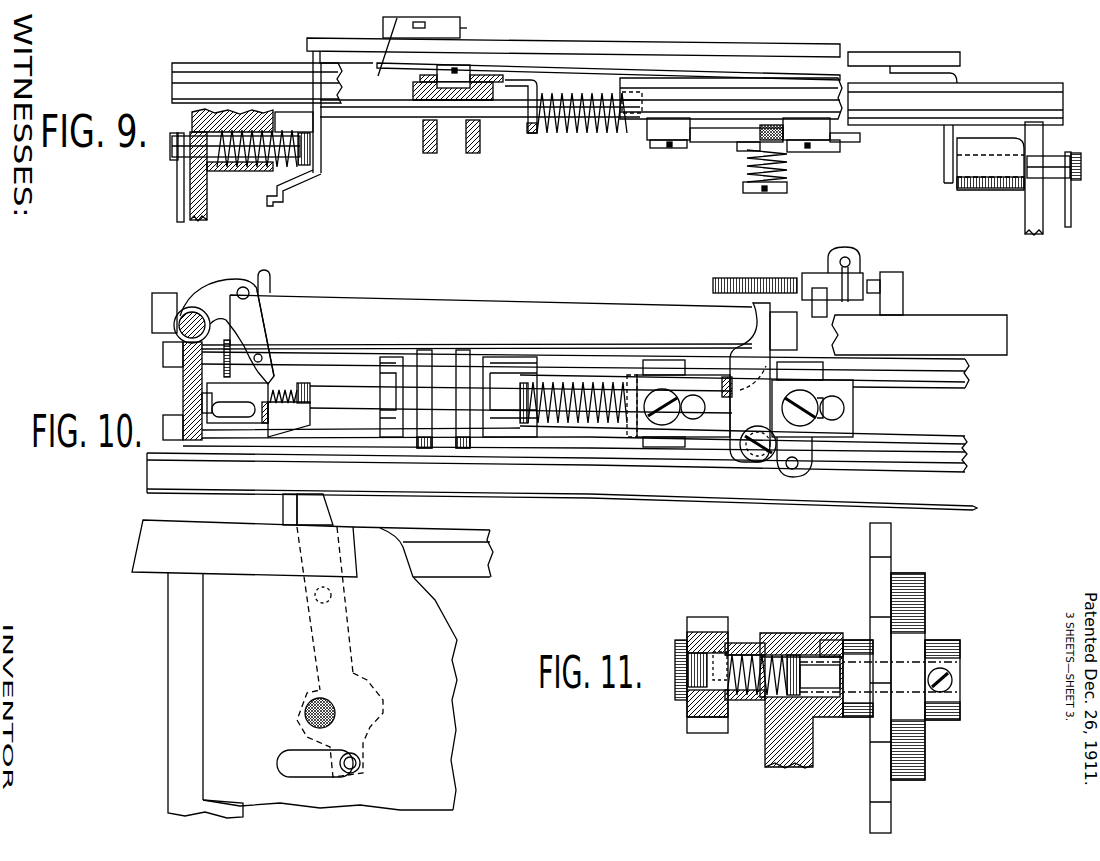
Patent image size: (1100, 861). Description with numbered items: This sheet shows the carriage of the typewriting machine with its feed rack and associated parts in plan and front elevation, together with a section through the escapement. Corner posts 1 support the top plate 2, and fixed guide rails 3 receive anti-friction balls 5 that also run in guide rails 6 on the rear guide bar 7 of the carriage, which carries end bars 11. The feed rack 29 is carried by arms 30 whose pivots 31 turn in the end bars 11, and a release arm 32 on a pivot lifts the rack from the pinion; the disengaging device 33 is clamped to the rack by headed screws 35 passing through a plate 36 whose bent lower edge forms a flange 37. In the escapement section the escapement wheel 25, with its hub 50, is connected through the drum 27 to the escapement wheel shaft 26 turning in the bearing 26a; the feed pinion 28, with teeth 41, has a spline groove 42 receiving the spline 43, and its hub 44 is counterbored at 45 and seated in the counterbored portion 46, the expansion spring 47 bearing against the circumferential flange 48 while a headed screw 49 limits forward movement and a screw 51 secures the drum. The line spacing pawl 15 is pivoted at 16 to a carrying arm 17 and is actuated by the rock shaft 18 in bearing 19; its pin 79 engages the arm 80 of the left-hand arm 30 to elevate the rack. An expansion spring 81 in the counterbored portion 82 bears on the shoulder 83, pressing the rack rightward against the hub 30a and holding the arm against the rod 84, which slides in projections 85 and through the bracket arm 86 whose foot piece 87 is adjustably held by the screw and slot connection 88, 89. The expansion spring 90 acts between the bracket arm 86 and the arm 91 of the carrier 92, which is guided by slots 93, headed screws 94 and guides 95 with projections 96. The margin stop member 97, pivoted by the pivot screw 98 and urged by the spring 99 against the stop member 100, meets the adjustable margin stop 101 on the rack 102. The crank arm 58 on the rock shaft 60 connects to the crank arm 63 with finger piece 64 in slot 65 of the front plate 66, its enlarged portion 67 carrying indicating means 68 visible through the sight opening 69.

In FIG. 10, the corner posts 1 is at (170, 690).
In FIG. 10, the top plate 2 is at (422, 534).
In FIG. 10, the fixed guide rails 3 is at (577, 412).
In FIG. 10, the anti-friction balls or rollers 5 is at (408, 341).
In FIG. 9, the guide rails 6 is at (178, 63).
In FIG. 10, the guide rails 6 is at (342, 351).
In FIG. 9, the rear guide bar 7 is at (488, 102).
In FIG. 10, the rear guide bar 7 is at (583, 400).
In FIG. 9, the end bars 11 is at (207, 190).
In FIG. 10, the end bars 11 is at (185, 382).
In FIG. 10, the line spacing pawl 15 is at (263, 318).
In FIG. 10, the pivot 16 is at (243, 287).
In FIG. 10, the carrying arm 17 is at (208, 290).
In FIG. 10, the rock shaft 18 is at (177, 320).
In FIG. 10, the bearing 19 is at (186, 307).
In FIG. 11, the escapement wheel 25 is at (890, 537).
In FIG. 11, the escapement wheel shaft 26 is at (822, 695).
In FIG. 11, the bearing 26a is at (797, 643).
In FIG. 11, the drum 27 is at (908, 676).
In FIG. 11, the feed pinion 28 is at (713, 640).
In FIG. 9, the feed rack 29 is at (757, 52).
In FIG. 9, the arms 30 is at (315, 115).
In FIG. 9, the hub 30a is at (955, 183).
In FIG. 9, the pivots 31 is at (197, 148).
In FIG. 9, the release arm 32 is at (180, 200).
In FIG. 9, the disengaging device 33 is at (462, 37).
In FIG. 9, the headed screws 35 is at (417, 28).
In FIG. 9, the plate 36 is at (383, 32).
In FIG. 9, the flange 37 is at (385, 58).
In FIG. 11, the teeth 41 is at (690, 720).
In FIG. 11, the spline groove 42 is at (700, 632).
In FIG. 11, the spline 43 is at (723, 653).
In FIG. 11, the hub 44 is at (742, 703).
In FIG. 11, the counterbore 45 is at (730, 702).
In FIG. 11, the counterbored portion 46 is at (767, 700).
In FIG. 11, the expansion spring 47 is at (693, 707).
In FIG. 11, the circumferential flange 48 is at (789, 675).
In FIG. 11, the headed screw 49 is at (677, 690).
In FIG. 11, the hub 50 is at (838, 650).
In FIG. 11, the screw 51 is at (938, 668).
In FIG. 10, the crank arm 58 is at (308, 509).
In FIG. 10, the rock shaft 60 is at (313, 595).
In FIG. 10, the crank arm 63 is at (347, 617).
In FIG. 10, the finger piece 64 is at (359, 758).
In FIG. 10, the slot 65 is at (297, 768).
In FIG. 10, the front plate 66 is at (407, 700).
In FIG. 10, the enlarged portion 67 is at (365, 690).
In FIG. 10, the indicating means 68 is at (336, 715).
In FIG. 10, the sight opening 69 is at (302, 725).
In FIG. 10, the pin 79 is at (263, 355).
In FIG. 9, the arm 80 is at (268, 206).
In FIG. 10, the arm 80 is at (267, 430).
In FIG. 9, the expansion spring 81 is at (262, 169).
In FIG. 10, the expansion spring 81 is at (300, 388).
In FIG. 9, the counterbored portion 82 is at (247, 123).
In FIG. 9, the shoulder 83 is at (306, 147).
In FIG. 10, the shoulder 83 is at (310, 388).
In FIG. 9, the rod 84 is at (390, 110).
In FIG. 10, the rod 84 is at (521, 399).
In FIG. 9, the projections 85 is at (466, 153).
In FIG. 10, the projections 85 is at (427, 350).
In FIG. 9, the bracket arm 86 is at (531, 133).
In FIG. 10, the bracket arm 86 is at (527, 382).
In FIG. 9, the foot piece 87 is at (537, 87).
In FIG. 9, the screw 88 is at (473, 65).
In FIG. 9, the slot 89 is at (442, 84).
In FIG. 9, the expansion spring 90 is at (590, 130).
In FIG. 10, the expansion spring 90 is at (577, 402).
In FIG. 9, the arm 91 is at (642, 105).
In FIG. 10, the arm 91 is at (627, 387).
In FIG. 9, the carrier 92 is at (710, 142).
In FIG. 10, the carrier 92 is at (717, 423).
In FIG. 10, the slots 93 is at (691, 403).
In FIG. 9, the headed screws 94 is at (660, 148).
In FIG. 10, the headed screws 94 is at (645, 412).
In FIG. 10, the guides 95 is at (683, 421).
In FIG. 9, the projections 96 is at (738, 130).
In FIG. 10, the projections 96 is at (645, 360).
In FIG. 9, the margin stop member 97 is at (747, 152).
In FIG. 10, the margin stop member 97 is at (742, 397).
In FIG. 9, the pivot screw 98 is at (757, 193).
In FIG. 10, the pivot screw 98 is at (742, 452).
In FIG. 9, the spring 99 is at (783, 170).
In FIG. 10, the stop member 100 is at (728, 380).
In FIG. 10, the adjustable margin stop 101 is at (825, 312).
In FIG. 10, the rack 102 is at (743, 280).